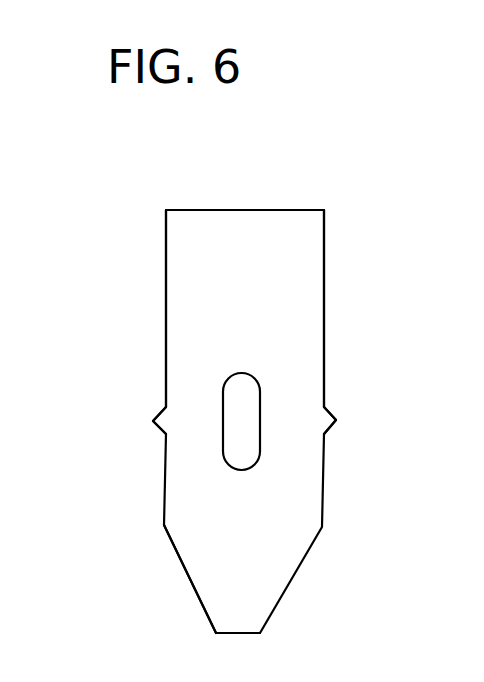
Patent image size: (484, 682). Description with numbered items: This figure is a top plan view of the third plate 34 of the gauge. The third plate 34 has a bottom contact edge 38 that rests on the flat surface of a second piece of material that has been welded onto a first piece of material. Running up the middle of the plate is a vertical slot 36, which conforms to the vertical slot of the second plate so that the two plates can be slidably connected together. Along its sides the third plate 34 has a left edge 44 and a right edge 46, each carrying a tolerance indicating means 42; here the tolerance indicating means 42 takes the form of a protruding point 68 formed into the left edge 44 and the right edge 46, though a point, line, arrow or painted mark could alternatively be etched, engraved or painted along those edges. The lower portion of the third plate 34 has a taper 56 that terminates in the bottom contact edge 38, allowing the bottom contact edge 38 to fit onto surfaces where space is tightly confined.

The third plate 34 is at (247, 260).
The vertical slot 36 is at (245, 415).
The bottom contact edge 38 is at (243, 636).
The tolerance indicating means 42 is at (342, 415).
The left edge 44 is at (154, 308).
The right edge 46 is at (325, 300).
The taper 56 is at (185, 592).
The protruding point 68 is at (143, 422).